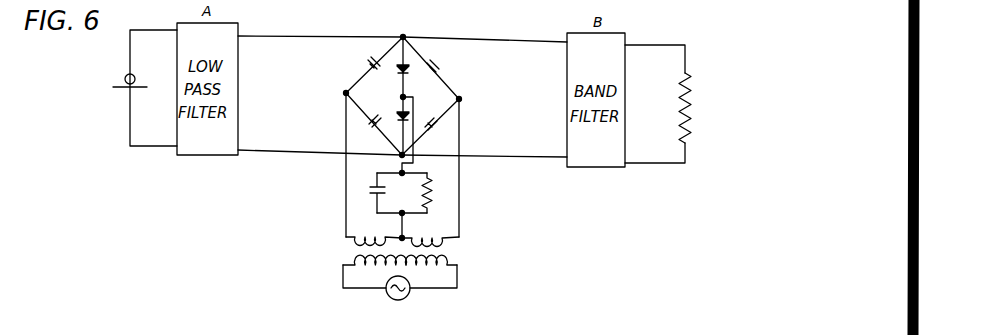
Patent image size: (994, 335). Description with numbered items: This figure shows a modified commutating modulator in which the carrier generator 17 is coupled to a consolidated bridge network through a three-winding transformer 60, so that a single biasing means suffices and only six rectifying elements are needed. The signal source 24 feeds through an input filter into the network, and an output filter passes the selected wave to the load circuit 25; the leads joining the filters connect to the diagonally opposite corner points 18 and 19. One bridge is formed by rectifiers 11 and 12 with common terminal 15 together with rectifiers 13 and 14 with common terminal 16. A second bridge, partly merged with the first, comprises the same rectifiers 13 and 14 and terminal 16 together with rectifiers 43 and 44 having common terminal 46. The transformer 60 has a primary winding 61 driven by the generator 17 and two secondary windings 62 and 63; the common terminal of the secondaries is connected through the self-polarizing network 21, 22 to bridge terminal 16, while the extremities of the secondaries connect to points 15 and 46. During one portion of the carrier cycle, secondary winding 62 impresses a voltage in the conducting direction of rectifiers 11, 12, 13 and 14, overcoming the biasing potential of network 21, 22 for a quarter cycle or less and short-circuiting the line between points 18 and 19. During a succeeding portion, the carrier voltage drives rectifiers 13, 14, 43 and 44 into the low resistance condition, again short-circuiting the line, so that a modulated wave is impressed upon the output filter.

The rectifier 11 is at (366, 64).
The rectifier 12 is at (375, 128).
The rectifier 13 is at (399, 68).
The rectifier 14 is at (399, 117).
The common terminal 15 is at (343, 95).
The common terminal 16 is at (404, 96).
The carrier generator 17 is at (405, 297).
The bridge corner point 18 is at (407, 36).
The bridge corner point 19 is at (401, 156).
The biasing network element 21 is at (372, 191).
The biasing network element 22 is at (430, 190).
The signal source 24 is at (134, 74).
The load circuit 25 is at (678, 105).
The rectifier 43 is at (441, 67).
The rectifier 44 is at (429, 130).
The common terminal 46 is at (462, 98).
The transformer 60 is at (458, 268).
The primary winding 61 is at (343, 265).
The secondary winding 62 is at (343, 237).
The secondary winding 63 is at (457, 240).